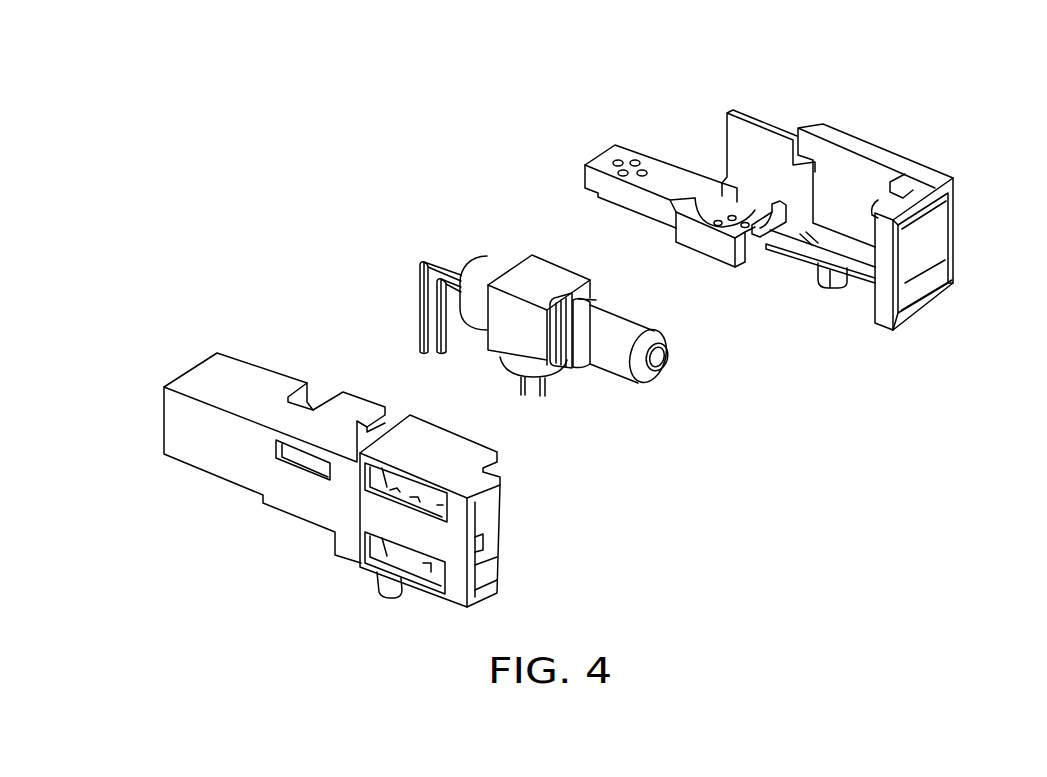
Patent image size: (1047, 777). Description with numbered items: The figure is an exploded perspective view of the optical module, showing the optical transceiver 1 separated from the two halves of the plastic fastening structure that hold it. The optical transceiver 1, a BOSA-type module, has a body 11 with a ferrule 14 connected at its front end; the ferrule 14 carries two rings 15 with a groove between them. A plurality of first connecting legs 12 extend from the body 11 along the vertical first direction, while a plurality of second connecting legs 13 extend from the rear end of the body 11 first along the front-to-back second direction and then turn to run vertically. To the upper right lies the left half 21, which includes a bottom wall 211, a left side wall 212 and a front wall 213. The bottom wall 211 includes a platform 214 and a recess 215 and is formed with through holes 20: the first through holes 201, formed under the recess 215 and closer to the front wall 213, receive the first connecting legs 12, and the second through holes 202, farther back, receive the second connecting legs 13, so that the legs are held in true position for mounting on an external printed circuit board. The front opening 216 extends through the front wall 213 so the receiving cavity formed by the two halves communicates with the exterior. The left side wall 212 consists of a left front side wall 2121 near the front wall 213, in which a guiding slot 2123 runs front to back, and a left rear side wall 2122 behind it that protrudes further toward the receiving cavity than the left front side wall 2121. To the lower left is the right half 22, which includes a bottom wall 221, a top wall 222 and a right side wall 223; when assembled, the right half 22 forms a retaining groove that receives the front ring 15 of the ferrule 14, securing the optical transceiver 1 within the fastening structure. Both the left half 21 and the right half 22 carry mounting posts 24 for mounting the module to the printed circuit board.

The optical transceiver 1 is at (498, 316).
The body 11 is at (517, 280).
The first connecting legs 12 is at (543, 397).
The second connecting legs 13 is at (445, 270).
The ferrule 14 is at (617, 362).
The rings 15 is at (598, 300).
The through holes 20 is at (670, 127).
The first through holes 201 is at (717, 222).
The second through holes 202 is at (638, 155).
The left half 21 is at (752, 208).
The bottom wall 211 is at (820, 245).
The left side wall 212 is at (866, 151).
The left front side wall 2121 is at (847, 197).
The left rear side wall 2122 is at (782, 172).
The guiding slot 2123 is at (928, 225).
The front wall 213 is at (907, 312).
The platform 214 is at (688, 212).
The recess 215 is at (735, 228).
The front opening 216 is at (938, 288).
The right half 22 is at (336, 445).
The bottom wall 221 is at (485, 578).
The top wall 222 is at (212, 373).
The right side wall 223 is at (297, 497).
The mounting posts 24 is at (388, 590).